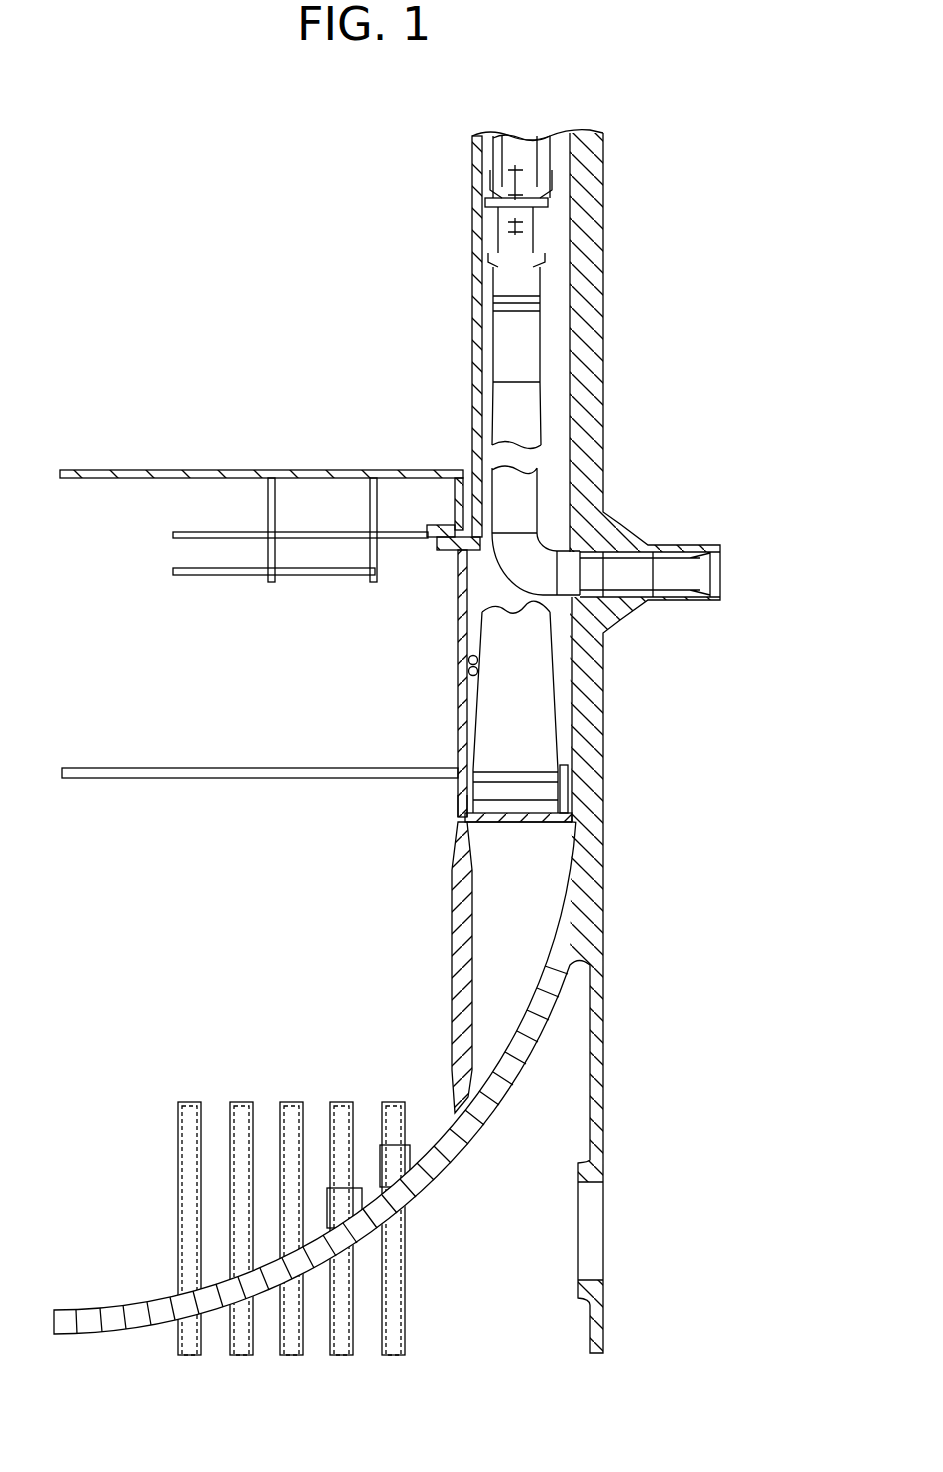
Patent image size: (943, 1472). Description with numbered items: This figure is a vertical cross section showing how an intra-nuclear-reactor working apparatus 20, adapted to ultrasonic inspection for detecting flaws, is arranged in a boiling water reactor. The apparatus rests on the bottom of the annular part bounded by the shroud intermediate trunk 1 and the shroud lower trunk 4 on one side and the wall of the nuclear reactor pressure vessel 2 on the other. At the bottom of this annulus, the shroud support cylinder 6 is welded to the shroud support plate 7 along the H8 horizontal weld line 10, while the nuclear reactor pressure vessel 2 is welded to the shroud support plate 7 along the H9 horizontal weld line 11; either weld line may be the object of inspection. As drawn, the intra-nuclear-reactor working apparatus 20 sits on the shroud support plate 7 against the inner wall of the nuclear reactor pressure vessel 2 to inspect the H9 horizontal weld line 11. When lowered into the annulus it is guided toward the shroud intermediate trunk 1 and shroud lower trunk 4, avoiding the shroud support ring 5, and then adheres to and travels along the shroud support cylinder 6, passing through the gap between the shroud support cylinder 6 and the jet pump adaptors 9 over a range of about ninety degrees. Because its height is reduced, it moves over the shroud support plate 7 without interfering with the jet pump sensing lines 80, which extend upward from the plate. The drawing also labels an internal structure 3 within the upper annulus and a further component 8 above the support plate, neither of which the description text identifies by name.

The shroud intermediate trunk 1 is at (472, 345).
The nuclear reactor pressure vessel 2 is at (583, 398).
The inner member 3 is at (525, 343).
The shroud lower trunk 4 is at (458, 620).
The shroud support ring 5 is at (322, 778).
The shroud support cylinder 6 is at (458, 800).
The shroud support plate 7 is at (502, 823).
The tapered body 8 is at (540, 682).
The jet pump adaptors 9 is at (522, 797).
The H8 horizontal weld line 10 is at (460, 823).
The H9 horizontal weld line 11 is at (572, 817).
The intra-nuclear-reactor working apparatus 20 is at (568, 780).
The jet pump sensing lines 80 is at (458, 680).